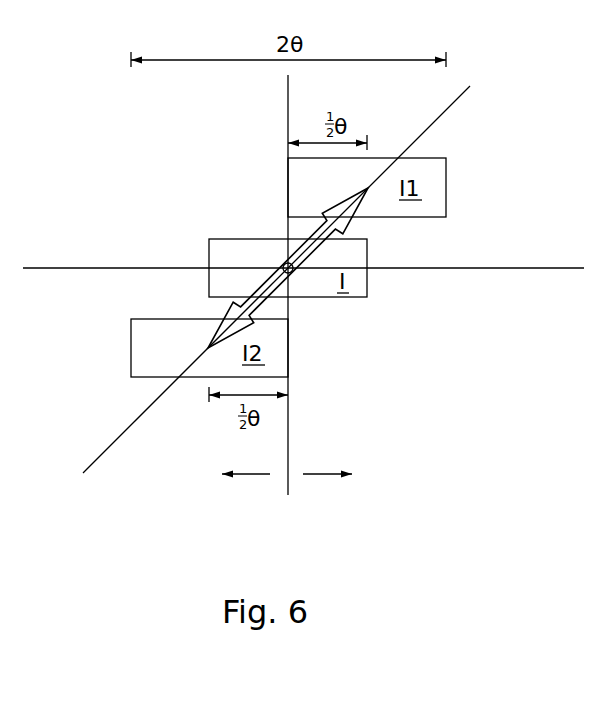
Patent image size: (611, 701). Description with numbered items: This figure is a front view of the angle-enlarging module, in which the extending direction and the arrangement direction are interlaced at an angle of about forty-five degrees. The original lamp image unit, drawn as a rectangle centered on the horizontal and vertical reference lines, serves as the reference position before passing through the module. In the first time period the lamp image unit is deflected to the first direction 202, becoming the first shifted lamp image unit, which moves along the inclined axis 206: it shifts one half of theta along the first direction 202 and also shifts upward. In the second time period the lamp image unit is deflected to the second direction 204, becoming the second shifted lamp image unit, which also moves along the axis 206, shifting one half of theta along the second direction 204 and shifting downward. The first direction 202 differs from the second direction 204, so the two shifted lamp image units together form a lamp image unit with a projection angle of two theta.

The first direction 202 is at (350, 476).
The second direction 204 is at (224, 476).
The axis 206 is at (462, 103).